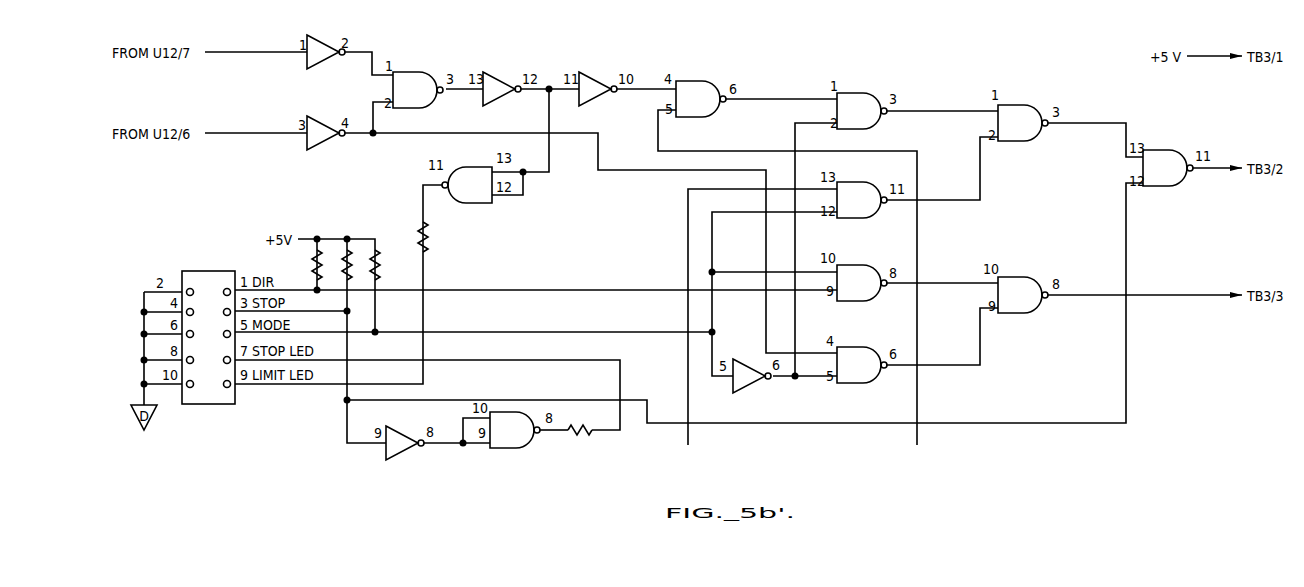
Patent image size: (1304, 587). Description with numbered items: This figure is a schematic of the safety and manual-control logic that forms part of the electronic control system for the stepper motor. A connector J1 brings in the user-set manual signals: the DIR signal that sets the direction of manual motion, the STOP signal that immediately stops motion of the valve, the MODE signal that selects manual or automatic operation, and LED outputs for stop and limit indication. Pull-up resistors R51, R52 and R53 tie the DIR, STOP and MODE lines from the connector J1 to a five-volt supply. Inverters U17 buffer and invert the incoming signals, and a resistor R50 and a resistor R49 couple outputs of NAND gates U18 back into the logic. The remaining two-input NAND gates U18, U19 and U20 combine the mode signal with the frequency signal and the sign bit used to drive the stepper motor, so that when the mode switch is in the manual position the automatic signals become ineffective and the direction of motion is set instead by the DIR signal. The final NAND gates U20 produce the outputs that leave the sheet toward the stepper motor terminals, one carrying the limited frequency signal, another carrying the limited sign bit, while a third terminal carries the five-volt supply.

The hex inverter U17 is at (539, 247).
The NAND gate U18 is at (559, 260).
The NAND gate U19 is at (862, 238).
The NAND gate U20 is at (1095, 209).
The resistor R49 is at (578, 421).
The resistor R50 is at (438, 237).
The pull-up resistor R51 is at (389, 265).
The pull-up resistor R52 is at (345, 249).
The pull-up resistor R53 is at (302, 265).
The connector J1 is at (208, 352).